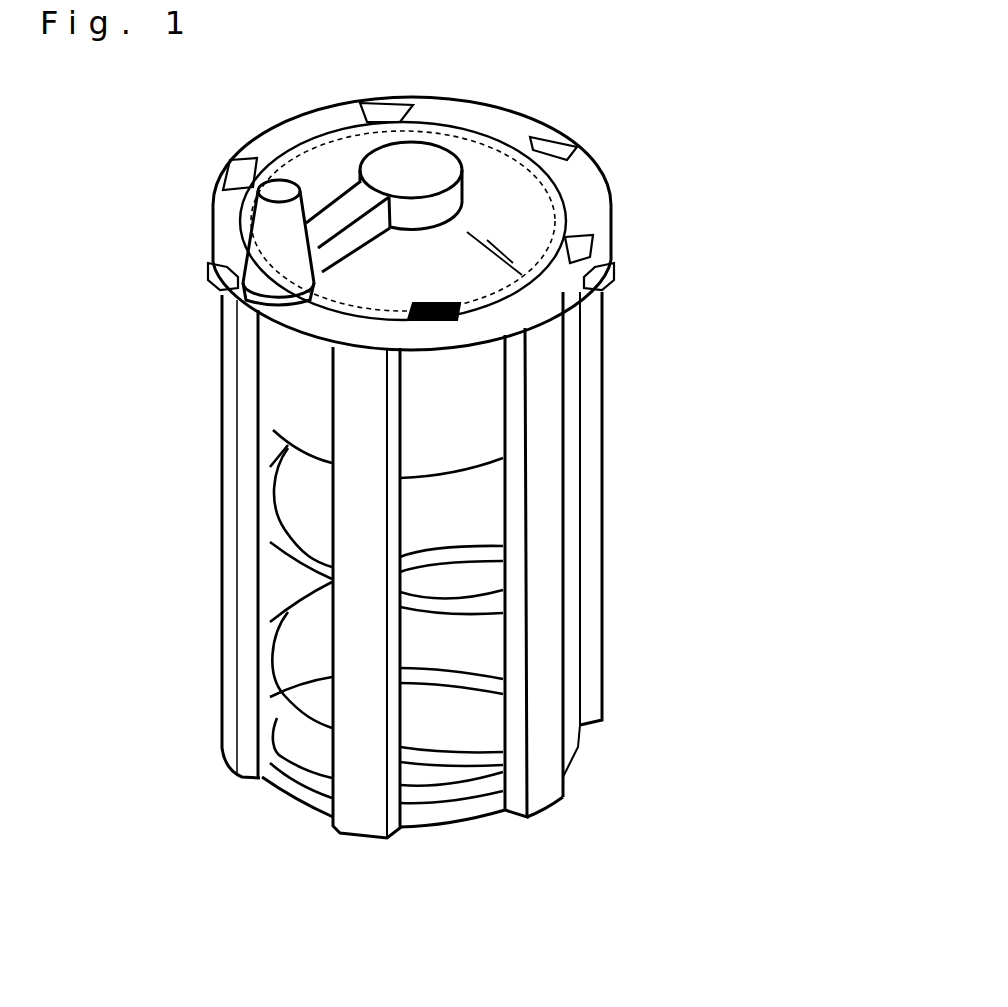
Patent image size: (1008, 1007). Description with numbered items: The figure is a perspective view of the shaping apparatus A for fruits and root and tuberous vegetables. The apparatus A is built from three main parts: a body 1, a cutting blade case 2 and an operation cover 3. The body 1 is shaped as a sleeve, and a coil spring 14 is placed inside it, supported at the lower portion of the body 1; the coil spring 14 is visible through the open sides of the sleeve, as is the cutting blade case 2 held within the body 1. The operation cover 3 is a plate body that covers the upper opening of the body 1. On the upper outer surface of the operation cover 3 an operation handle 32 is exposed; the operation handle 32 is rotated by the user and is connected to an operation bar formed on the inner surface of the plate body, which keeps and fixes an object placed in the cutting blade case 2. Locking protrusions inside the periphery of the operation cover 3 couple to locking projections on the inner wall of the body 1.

The body 1 is at (614, 670).
The cutting blade case 2 is at (470, 410).
The operation cover 3 is at (612, 180).
The coil spring 14 is at (468, 600).
The operation handle 32 is at (268, 226).
The shaping apparatus A is at (735, 465).